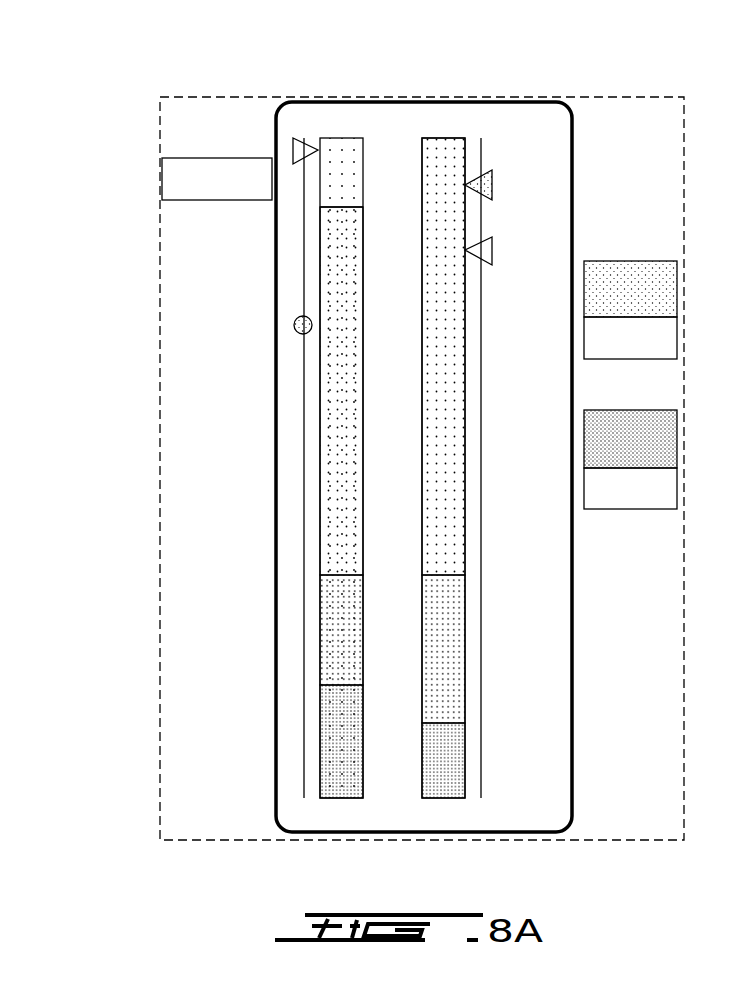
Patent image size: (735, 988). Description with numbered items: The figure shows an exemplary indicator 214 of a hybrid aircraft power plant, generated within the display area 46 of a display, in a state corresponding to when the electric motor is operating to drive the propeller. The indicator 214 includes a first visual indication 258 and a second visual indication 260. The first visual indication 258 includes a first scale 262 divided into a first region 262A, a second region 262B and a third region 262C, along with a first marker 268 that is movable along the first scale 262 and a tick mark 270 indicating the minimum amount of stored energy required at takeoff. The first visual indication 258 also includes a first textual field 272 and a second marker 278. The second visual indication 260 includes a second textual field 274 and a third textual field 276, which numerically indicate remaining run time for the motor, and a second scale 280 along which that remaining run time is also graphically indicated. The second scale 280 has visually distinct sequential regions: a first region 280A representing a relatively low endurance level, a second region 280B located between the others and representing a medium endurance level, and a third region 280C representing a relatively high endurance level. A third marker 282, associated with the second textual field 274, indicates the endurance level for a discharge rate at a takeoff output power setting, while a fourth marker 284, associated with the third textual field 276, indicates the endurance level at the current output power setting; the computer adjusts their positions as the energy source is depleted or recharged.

The indicator 214 is at (240, 88).
The display area 46 is at (455, 97).
The second visual indication 260 is at (530, 134).
The first scale 262 is at (298, 472).
The first region 262A is at (340, 745).
The second region 262B is at (340, 636).
The third region 262C is at (340, 490).
The first marker 268 is at (293, 150).
The tick mark 270 is at (345, 205).
The first textual field 272 is at (162, 174).
The second textual field 274 is at (632, 354).
The third textual field 276 is at (630, 504).
The second marker 278 is at (295, 327).
The second scale 280 is at (488, 511).
The first region 280A is at (445, 806).
The second region 280B is at (445, 650).
The third region 280C is at (445, 527).
The third marker 282 is at (490, 250).
The fourth marker 284 is at (490, 185).
The first visual indication 258 is at (213, 311).